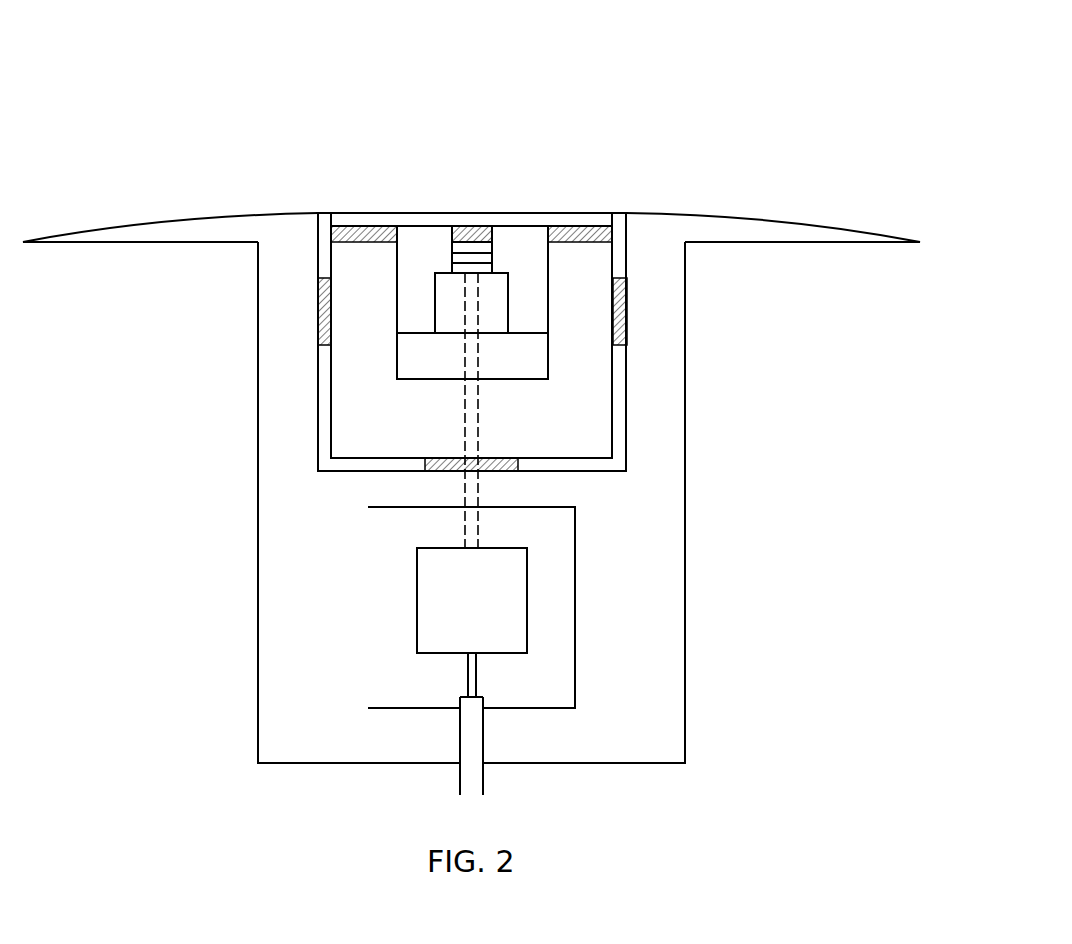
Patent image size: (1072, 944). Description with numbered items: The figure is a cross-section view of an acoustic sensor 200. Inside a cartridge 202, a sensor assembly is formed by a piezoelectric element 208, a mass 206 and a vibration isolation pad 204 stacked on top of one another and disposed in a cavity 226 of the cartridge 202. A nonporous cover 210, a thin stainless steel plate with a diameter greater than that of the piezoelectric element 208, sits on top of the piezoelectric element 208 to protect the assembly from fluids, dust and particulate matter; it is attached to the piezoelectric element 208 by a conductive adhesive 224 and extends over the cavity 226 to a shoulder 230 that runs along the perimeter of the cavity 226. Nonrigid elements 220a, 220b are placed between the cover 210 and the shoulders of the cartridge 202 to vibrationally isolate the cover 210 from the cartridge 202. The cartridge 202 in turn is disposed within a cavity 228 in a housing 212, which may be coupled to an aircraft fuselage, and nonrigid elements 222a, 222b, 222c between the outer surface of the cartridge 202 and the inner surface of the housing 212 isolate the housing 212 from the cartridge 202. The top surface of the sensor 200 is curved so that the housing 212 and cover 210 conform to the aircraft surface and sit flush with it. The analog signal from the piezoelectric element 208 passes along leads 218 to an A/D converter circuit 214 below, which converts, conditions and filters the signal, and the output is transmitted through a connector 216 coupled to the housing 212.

The acoustic sensor 200 is at (942, 95).
The cartridge 202 is at (608, 435).
The vibration isolation pad 204 is at (545, 365).
The mass 206 is at (437, 277).
The piezoelectric element 208 is at (499, 245).
The nonporous cover 210 is at (405, 215).
The housing 212 is at (262, 748).
The A/D converter circuit 214 is at (420, 635).
The connector 216 is at (481, 743).
The signal leads 218 is at (485, 486).
The nonrigid element 220a is at (360, 226).
The nonrigid element 220b is at (585, 226).
The nonrigid element 222a is at (317, 328).
The nonrigid element 222b is at (438, 473).
The nonrigid element 222c is at (627, 323).
The conductive adhesive 224 is at (460, 226).
The cavity 226 is at (398, 323).
The cavity 228 is at (318, 433).
The shoulder 230 is at (603, 246).